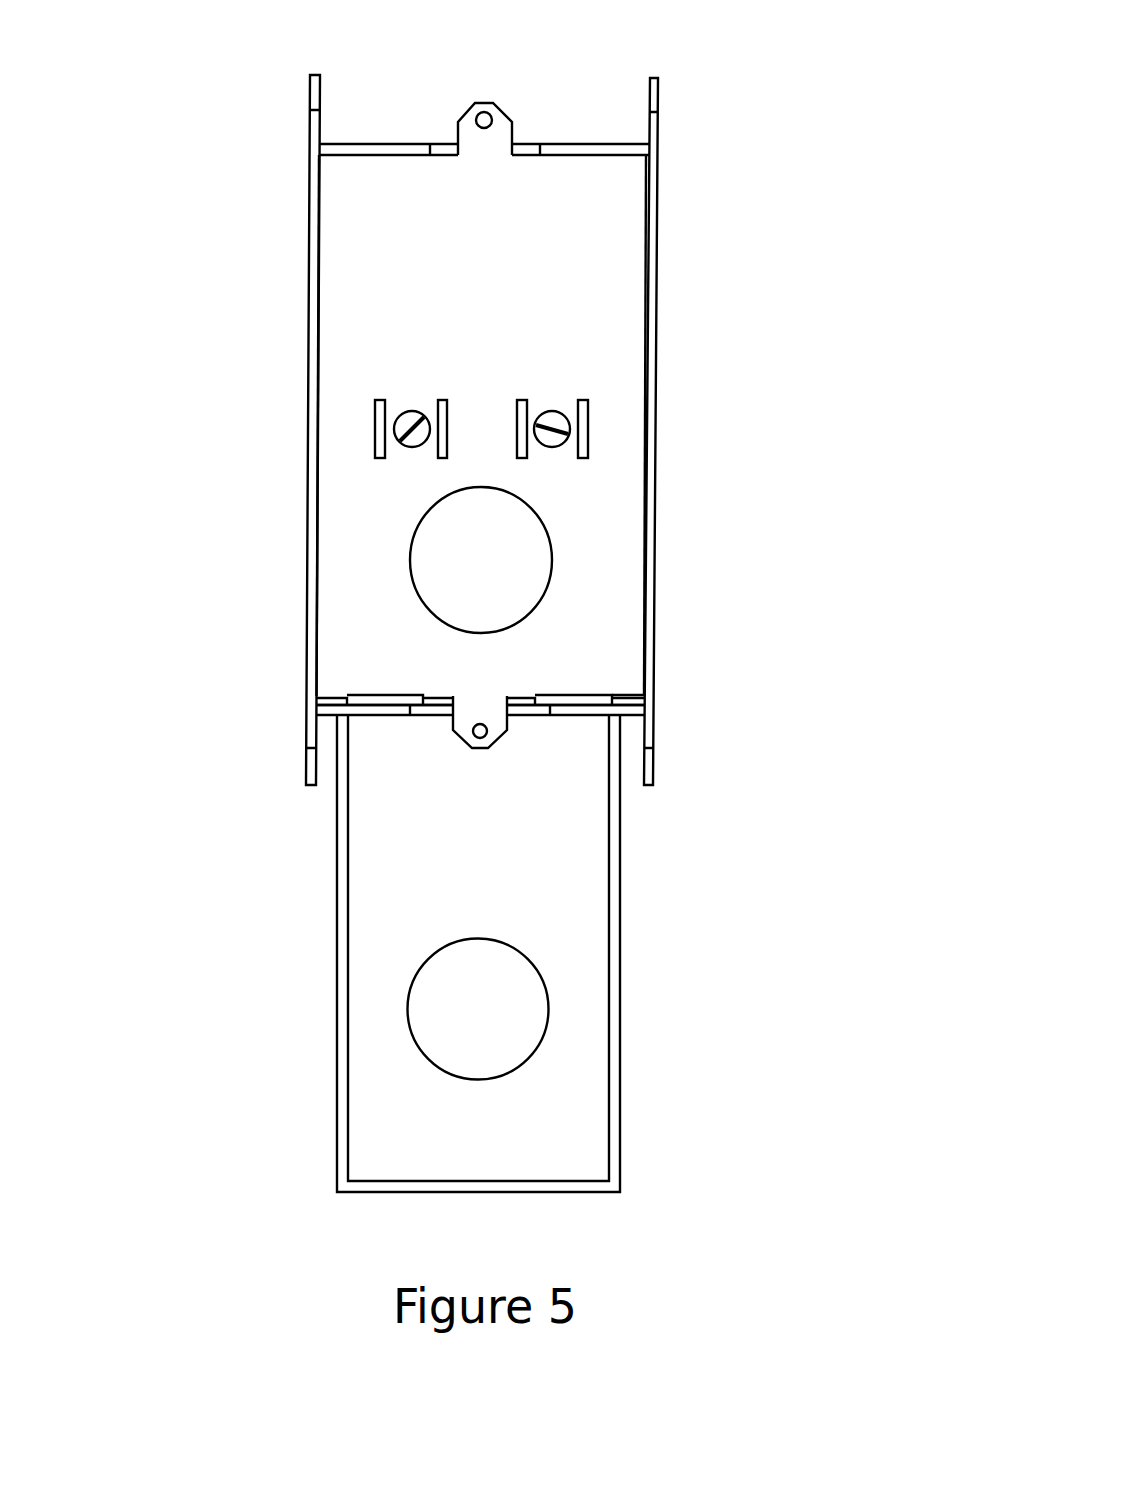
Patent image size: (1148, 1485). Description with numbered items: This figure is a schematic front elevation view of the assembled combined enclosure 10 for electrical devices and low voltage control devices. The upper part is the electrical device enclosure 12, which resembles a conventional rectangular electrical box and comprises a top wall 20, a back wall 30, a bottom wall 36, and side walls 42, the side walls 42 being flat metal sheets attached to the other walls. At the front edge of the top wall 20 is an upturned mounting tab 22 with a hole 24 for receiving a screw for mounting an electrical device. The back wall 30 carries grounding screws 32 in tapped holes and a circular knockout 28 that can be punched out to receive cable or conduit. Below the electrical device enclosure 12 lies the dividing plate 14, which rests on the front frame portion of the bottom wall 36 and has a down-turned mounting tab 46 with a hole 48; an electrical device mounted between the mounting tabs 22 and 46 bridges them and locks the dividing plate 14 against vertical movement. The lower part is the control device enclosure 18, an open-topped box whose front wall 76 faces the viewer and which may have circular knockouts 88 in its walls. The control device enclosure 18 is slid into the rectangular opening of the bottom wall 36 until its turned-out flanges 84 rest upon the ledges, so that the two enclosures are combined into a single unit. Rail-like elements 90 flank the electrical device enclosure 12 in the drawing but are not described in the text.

The combined enclosure 10 is at (177, 530).
The electrical device enclosure 12 is at (823, 505).
The dividing plate 14 is at (578, 694).
The control device enclosure 18 is at (787, 957).
The top wall 20 is at (585, 144).
The mounting tab 22 is at (503, 117).
The hole 24 is at (488, 112).
The circular knockout 28 is at (496, 548).
The back wall 30 is at (605, 590).
The grounding screws 32 is at (555, 408).
The bottom wall 36 is at (638, 713).
The side walls 42 is at (657, 462).
The mounting tab 46 is at (507, 732).
The hole 48 is at (482, 742).
The front wall 76 is at (558, 1116).
The flanges 84 is at (635, 694).
The circular knockouts 88 is at (505, 994).
The mounting rail 90 is at (657, 248).